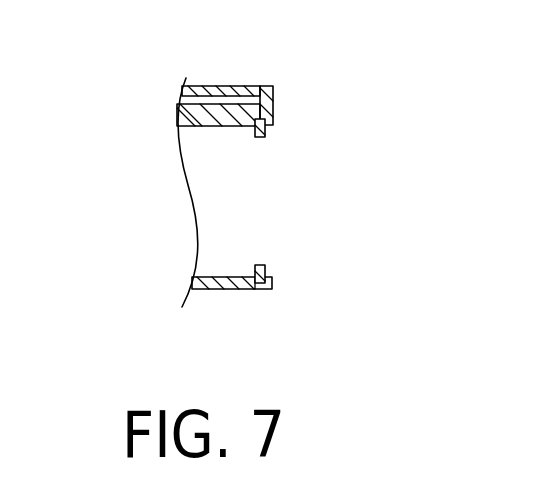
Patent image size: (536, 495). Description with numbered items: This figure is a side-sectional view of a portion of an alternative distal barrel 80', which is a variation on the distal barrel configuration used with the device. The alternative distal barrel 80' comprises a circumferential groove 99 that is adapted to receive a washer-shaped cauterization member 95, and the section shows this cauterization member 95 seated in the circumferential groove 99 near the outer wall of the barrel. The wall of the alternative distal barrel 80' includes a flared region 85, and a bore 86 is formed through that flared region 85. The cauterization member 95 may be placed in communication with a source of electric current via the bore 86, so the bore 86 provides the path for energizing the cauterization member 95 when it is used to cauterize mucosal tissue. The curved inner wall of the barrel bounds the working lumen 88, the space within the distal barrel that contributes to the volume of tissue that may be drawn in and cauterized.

The alternative distal barrel 80' is at (216, 191).
The flared region 85 is at (202, 86).
The bore 86 is at (232, 103).
The working lumen 88 is at (220, 194).
The cauterization member 95 is at (268, 137).
The circumferential groove 99 is at (275, 113).